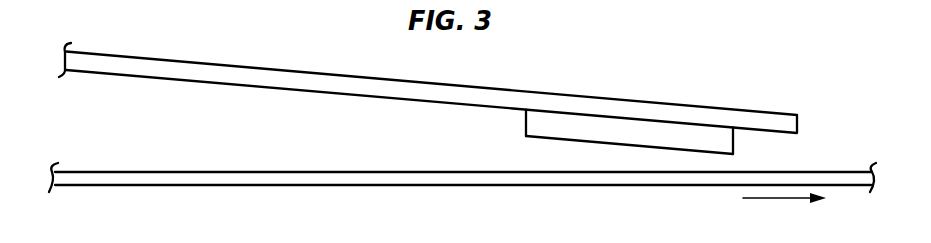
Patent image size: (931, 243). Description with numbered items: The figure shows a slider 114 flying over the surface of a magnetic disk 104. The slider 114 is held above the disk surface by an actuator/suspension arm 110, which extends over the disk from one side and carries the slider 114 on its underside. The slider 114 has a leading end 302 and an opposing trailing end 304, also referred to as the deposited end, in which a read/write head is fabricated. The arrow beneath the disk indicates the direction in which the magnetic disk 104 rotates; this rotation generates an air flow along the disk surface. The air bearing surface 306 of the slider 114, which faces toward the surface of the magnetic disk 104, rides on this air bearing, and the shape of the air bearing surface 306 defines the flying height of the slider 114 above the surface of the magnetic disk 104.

The magnetic disk 104 is at (462, 173).
The actuator/suspension arm 110 is at (318, 80).
The slider 114 is at (625, 115).
The leading end 302 is at (512, 125).
The trailing end 304 is at (751, 147).
The air bearing surface 306 is at (596, 149).